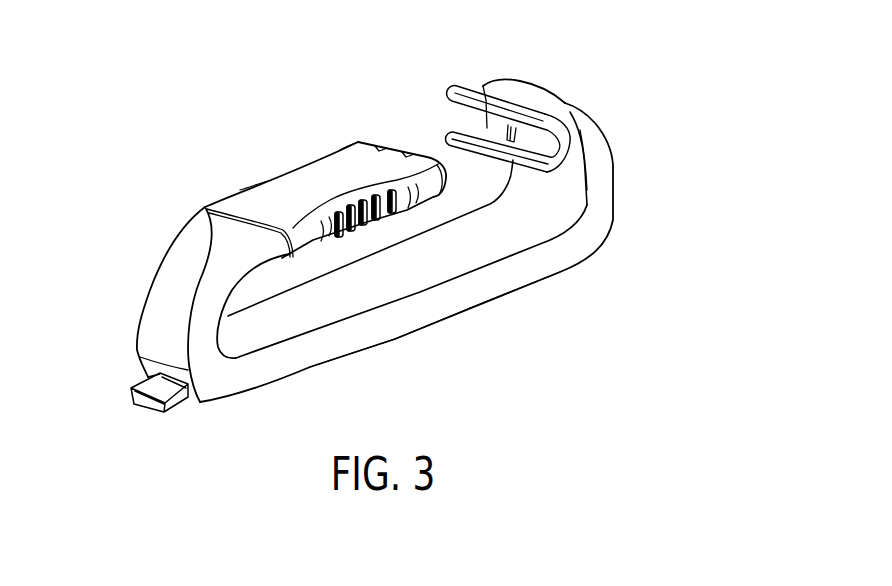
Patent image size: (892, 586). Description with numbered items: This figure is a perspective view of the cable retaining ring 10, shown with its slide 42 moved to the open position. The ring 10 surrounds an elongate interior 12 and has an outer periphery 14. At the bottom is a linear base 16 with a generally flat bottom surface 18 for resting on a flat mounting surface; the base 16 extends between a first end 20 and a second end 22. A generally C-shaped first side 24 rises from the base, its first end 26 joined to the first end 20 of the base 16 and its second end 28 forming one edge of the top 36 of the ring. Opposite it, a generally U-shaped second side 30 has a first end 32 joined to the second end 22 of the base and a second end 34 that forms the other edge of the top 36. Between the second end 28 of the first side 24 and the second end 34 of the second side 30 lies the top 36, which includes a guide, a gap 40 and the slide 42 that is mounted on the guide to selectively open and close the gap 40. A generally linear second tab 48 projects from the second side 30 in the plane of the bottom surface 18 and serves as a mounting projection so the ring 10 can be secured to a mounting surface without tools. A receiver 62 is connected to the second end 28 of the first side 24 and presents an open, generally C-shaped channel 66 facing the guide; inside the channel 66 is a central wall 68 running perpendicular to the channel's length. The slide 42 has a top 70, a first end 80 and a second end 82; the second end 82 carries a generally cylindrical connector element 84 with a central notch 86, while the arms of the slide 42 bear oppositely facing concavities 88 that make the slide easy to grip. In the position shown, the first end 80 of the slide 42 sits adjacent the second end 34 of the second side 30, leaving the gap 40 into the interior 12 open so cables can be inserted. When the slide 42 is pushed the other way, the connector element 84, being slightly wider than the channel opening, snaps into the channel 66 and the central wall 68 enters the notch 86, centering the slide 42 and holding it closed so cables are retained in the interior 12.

The cable retaining ring 10 is at (152, 160).
The elongate interior 12 is at (283, 288).
The outer periphery 14 is at (152, 301).
The base 16 is at (427, 289).
The flat bottom surface 18 is at (395, 340).
The first end of the base 20 is at (540, 232).
The second end of the base 22 is at (255, 348).
The first side 24 is at (572, 178).
The first end of the first side 26 is at (588, 218).
The second end of the first side 28 is at (563, 104).
The second side 30 is at (170, 279).
The first end of the second side 32 is at (227, 385).
The second end of the second side 34 is at (203, 220).
The top of the ring 36 is at (359, 77).
The gap 40 is at (436, 146).
The slide 42 is at (303, 177).
The second tab 48 is at (153, 389).
The receiver 62 is at (563, 142).
The channel 66 is at (473, 123).
The central wall 68 is at (516, 127).
The top of the slide 70 is at (270, 190).
The first end of the slide 80 is at (234, 201).
The second end of the slide 82 is at (353, 158).
The cylindrical connector element 84 is at (386, 147).
The central notch 86 is at (410, 152).
The concavities 88 is at (361, 228).